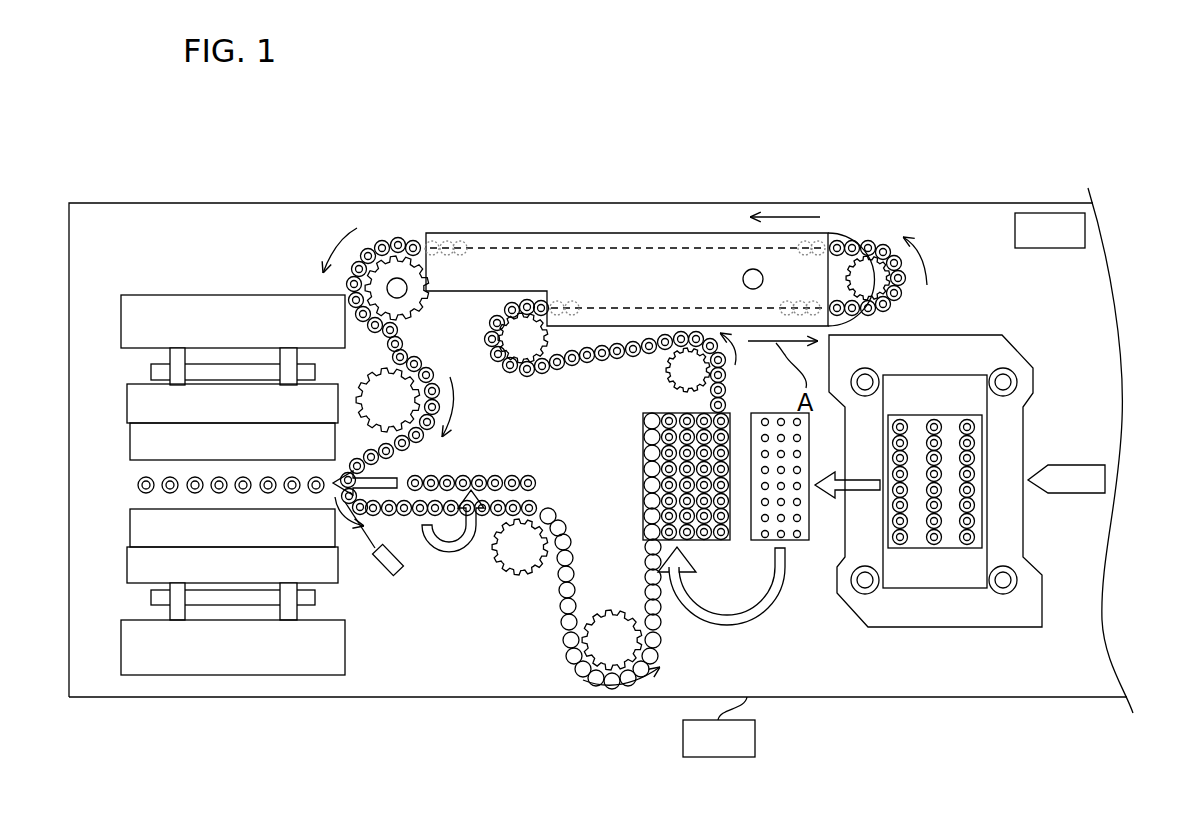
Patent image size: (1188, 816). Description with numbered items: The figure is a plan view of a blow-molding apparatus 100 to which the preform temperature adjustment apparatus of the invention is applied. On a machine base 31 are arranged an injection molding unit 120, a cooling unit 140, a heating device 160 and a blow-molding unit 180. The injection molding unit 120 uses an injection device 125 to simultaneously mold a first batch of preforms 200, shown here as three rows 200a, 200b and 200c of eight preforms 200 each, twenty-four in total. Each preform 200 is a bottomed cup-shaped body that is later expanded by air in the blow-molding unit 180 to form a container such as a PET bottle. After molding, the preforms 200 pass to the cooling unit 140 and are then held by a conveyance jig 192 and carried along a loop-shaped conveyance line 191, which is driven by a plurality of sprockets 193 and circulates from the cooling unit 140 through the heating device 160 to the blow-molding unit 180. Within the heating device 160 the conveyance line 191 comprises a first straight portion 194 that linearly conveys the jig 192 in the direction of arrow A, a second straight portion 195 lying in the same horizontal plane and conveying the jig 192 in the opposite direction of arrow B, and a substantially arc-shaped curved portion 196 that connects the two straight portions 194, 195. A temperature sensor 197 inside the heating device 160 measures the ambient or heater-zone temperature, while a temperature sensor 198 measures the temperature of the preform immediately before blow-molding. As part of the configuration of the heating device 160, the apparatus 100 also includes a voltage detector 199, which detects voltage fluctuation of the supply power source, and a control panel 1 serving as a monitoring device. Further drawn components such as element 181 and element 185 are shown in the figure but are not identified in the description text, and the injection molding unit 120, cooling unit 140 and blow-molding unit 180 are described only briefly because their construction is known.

The control panel 1 is at (738, 757).
The machine base 31 is at (262, 700).
The blow-molding apparatus 100 is at (913, 185).
The injection molding unit 120 is at (1022, 340).
The injection device 125 is at (1122, 440).
The cooling unit 140 is at (740, 548).
The heating device 160 is at (655, 232).
The blow-molding unit 180 is at (218, 255).
The transfer roller 181 is at (338, 537).
The return path 185 is at (448, 557).
The conveyance line 191 is at (566, 610).
The conveyance jig 192 is at (571, 383).
The sprocket 193 is at (660, 374).
The first straight portion 194 is at (918, 306).
The second straight portion 195 is at (928, 249).
The curved portion 196 is at (937, 283).
The temperature sensor 197 is at (753, 268).
The temperature sensor 198 is at (400, 575).
The voltage detector 199 is at (1050, 213).
The preform 200 is at (712, 402).
The first row of preforms 200a is at (968, 545).
The second row of preforms 200b is at (934, 545).
The third row of preforms 200c is at (900, 545).